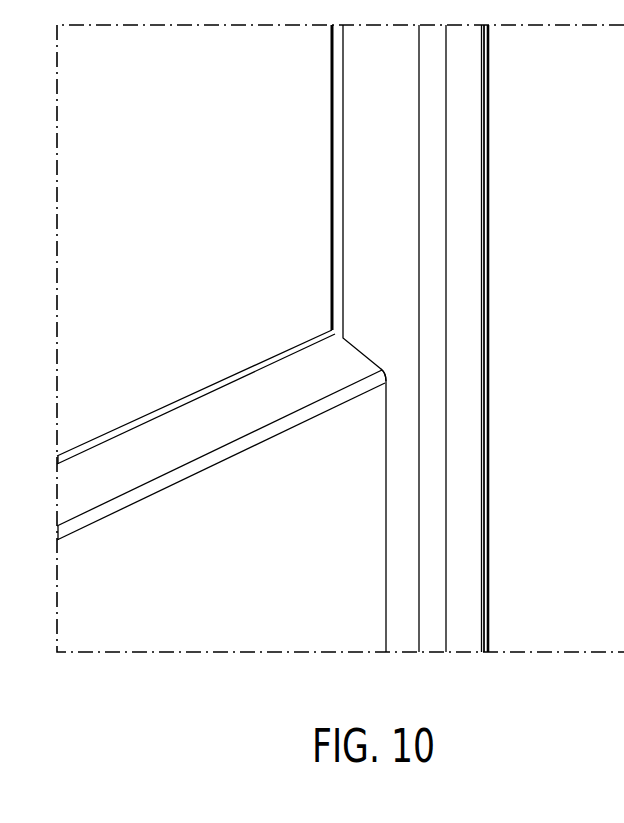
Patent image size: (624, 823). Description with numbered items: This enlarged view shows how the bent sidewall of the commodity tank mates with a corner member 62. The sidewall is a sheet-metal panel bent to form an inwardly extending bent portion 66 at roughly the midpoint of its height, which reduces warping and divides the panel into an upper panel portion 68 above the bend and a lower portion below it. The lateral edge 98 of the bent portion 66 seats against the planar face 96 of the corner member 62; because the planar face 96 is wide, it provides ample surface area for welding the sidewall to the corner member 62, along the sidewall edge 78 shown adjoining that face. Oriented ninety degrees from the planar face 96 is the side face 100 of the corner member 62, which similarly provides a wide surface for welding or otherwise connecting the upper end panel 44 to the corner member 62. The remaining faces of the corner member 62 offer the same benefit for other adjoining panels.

The upper end panel 44 is at (603, 358).
The corner member 62 is at (486, 93).
The bent portion 66 is at (179, 418).
The upper panel portion 68 is at (206, 161).
The side wall 78 is at (334, 198).
The planar face 96 is at (362, 67).
The lateral edge 98 is at (365, 361).
The side face 100 is at (468, 228).